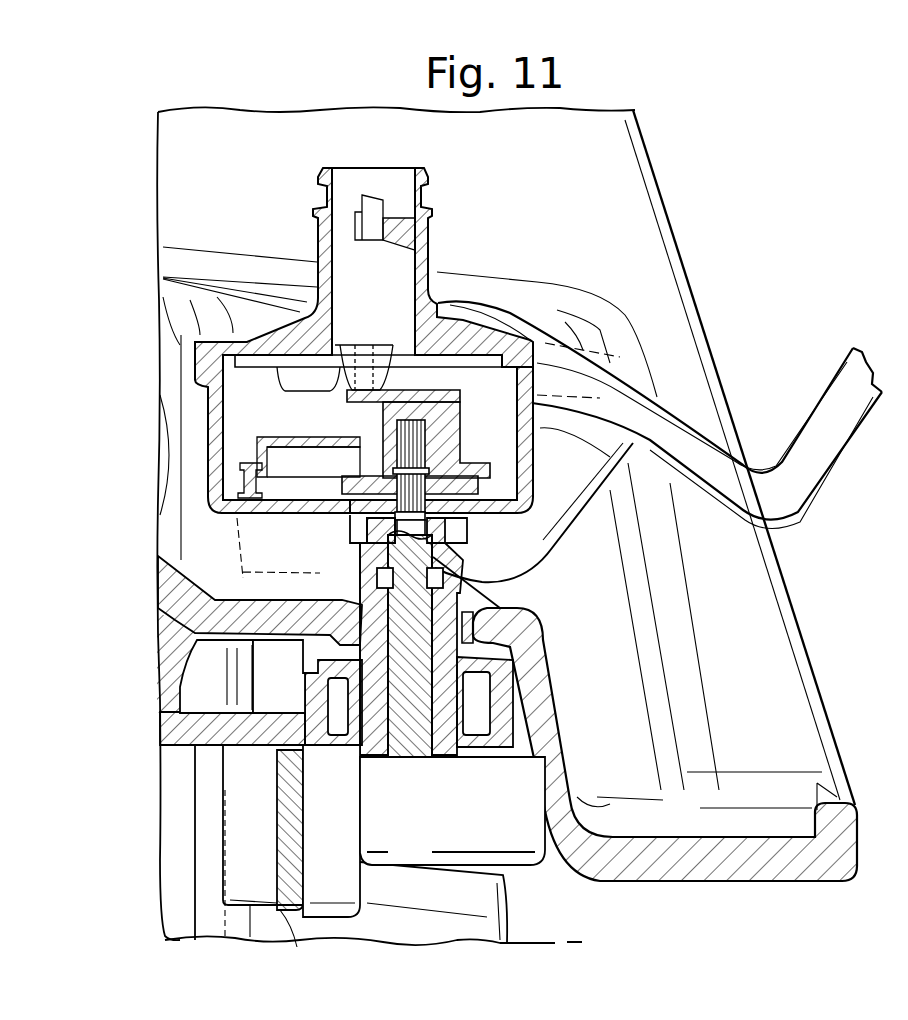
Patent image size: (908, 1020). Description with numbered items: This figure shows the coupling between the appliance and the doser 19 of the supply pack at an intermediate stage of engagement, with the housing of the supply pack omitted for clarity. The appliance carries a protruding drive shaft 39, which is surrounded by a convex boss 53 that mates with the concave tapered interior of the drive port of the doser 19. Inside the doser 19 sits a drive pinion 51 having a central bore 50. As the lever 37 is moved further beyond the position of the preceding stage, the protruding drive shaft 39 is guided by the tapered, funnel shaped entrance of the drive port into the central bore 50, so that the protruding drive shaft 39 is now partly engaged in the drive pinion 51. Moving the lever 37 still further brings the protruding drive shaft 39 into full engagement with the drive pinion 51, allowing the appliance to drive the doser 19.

The doser 19 is at (223, 503).
The lever 37 is at (830, 435).
The protruding drive shaft 39 is at (470, 528).
The central bore 50 is at (412, 448).
The drive pinion 51 is at (443, 430).
The convex boss 53 is at (373, 570).